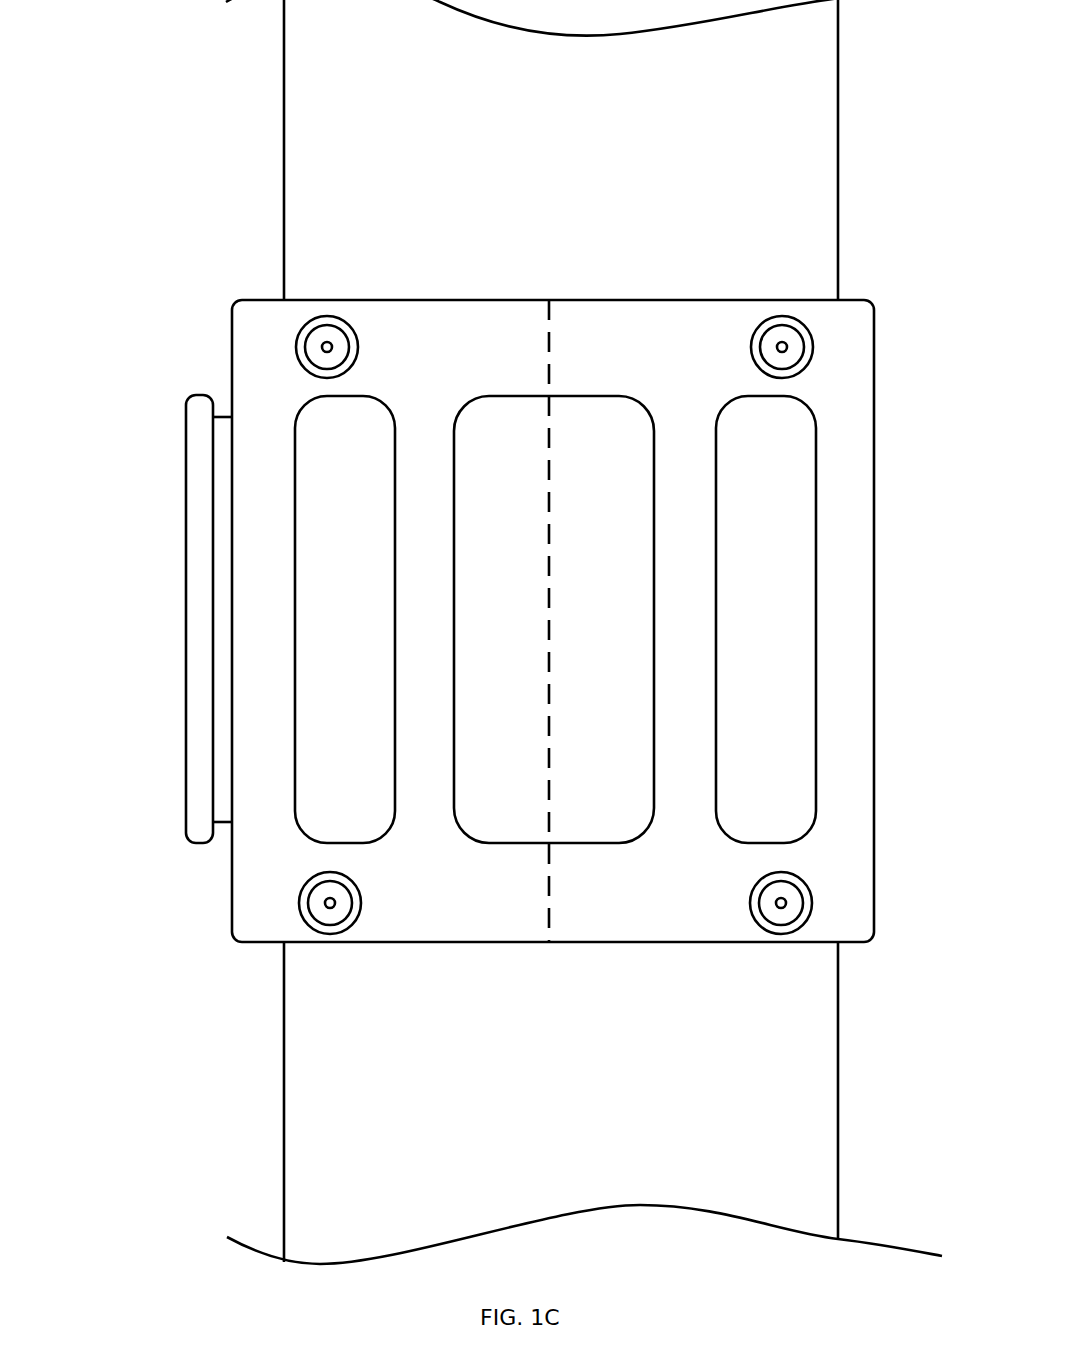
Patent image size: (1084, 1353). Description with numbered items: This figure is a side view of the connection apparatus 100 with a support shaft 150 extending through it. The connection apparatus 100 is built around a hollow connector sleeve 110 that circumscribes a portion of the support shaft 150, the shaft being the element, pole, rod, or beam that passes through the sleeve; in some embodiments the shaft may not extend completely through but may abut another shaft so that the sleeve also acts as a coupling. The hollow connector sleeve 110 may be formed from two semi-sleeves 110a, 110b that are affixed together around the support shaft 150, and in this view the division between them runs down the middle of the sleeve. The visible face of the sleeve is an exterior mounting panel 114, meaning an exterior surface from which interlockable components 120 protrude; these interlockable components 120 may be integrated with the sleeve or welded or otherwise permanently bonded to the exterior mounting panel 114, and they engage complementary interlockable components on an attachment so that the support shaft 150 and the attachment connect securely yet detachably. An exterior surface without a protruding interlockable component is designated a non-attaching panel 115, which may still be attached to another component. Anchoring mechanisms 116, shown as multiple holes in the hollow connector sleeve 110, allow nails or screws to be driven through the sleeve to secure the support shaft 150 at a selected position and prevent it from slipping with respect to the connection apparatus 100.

The connection apparatus 100 is at (131, 237).
The hollow connector sleeve 110 is at (247, 318).
The semi-sleeve 110a is at (432, 347).
The semi-sleeve 110b is at (667, 347).
The exterior mounting panel 114 is at (231, 365).
The non-attaching panel 115 is at (876, 337).
The anchoring mechanism 116 is at (315, 345).
The interlockable component 120 is at (742, 523).
The support shaft 150 is at (576, 198).